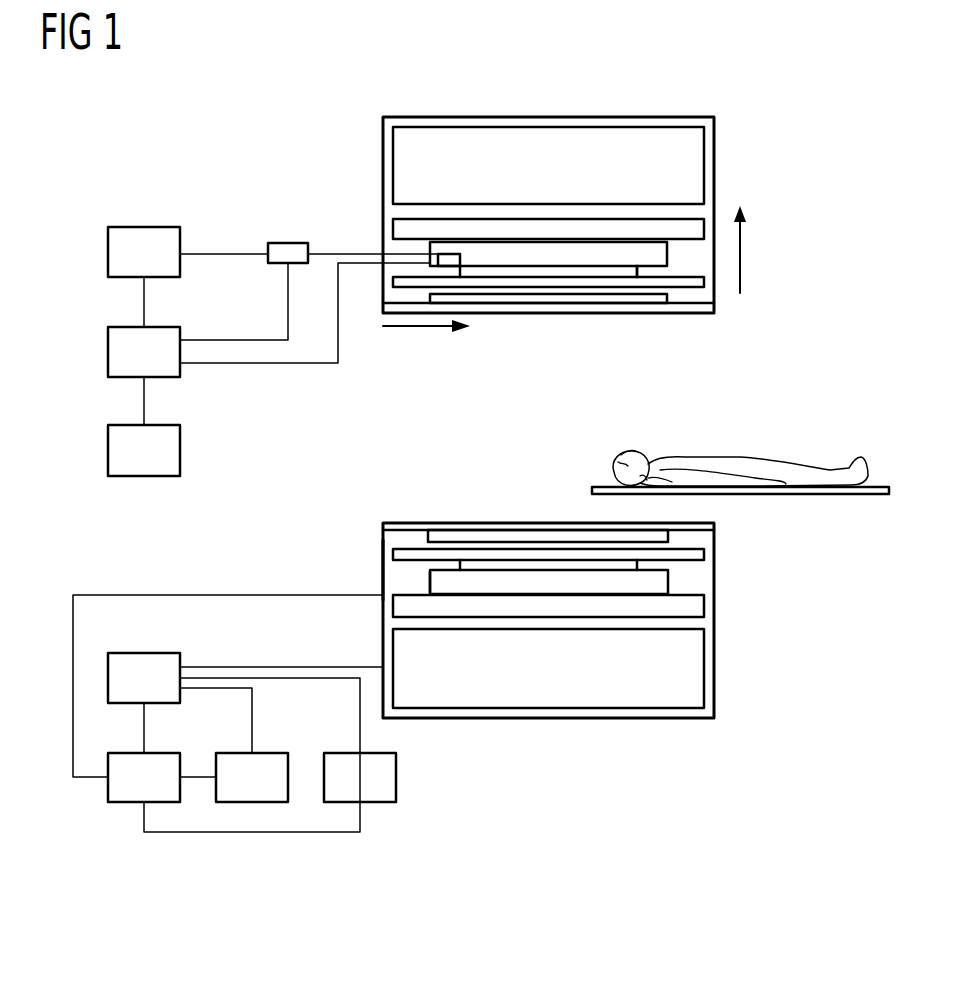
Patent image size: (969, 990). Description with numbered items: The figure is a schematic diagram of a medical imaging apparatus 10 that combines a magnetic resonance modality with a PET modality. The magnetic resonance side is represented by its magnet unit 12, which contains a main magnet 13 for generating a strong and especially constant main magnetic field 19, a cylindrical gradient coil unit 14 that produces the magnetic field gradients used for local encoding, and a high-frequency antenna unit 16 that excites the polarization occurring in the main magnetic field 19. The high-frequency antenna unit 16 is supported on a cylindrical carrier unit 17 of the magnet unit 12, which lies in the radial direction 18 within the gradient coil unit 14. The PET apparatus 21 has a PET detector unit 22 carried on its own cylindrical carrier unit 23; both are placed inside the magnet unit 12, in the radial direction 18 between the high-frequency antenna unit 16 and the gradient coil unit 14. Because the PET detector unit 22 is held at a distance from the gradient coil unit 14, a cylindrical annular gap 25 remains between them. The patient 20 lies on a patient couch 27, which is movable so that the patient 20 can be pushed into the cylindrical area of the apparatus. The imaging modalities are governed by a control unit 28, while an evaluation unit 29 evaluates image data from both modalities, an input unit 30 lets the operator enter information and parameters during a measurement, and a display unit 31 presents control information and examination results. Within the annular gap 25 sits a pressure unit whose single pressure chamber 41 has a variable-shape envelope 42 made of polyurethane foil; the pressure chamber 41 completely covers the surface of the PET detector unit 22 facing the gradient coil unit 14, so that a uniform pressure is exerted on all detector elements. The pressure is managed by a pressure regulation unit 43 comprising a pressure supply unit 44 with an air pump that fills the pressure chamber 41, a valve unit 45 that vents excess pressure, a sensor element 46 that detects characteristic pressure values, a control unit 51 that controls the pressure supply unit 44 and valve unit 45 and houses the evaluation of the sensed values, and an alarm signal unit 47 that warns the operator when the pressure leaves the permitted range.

The medical imaging apparatus 10 is at (810, 171).
The magnet unit 12 is at (670, 760).
The main magnet 13 is at (692, 672).
The gradient coil unit 14 is at (692, 605).
The high-frequency antenna unit 16 is at (505, 536).
The cylindrical carrier unit 17 is at (462, 526).
The radial direction 18 is at (740, 255).
The main magnetic field 19 is at (420, 330).
The patient 20 is at (823, 472).
The PET apparatus 21 is at (378, 563).
The PET detector unit 22 is at (562, 564).
The cylindrical carrier unit 23 is at (407, 555).
The cylindrical annular gap 25 is at (440, 582).
The patient couch 27 is at (848, 497).
The control unit 28 is at (182, 657).
The evaluation unit 29 is at (123, 805).
The input unit 30 is at (255, 805).
The display unit 31 is at (383, 805).
The pressure chamber 41 is at (600, 253).
The envelope 42 is at (650, 266).
The pressure regulation unit 43 is at (93, 184).
The pressure supply unit 44 is at (142, 226).
The valve unit 45 is at (287, 243).
The sensor element 46 is at (447, 254).
The alarm signal unit 47 is at (107, 450).
The control unit 51 is at (107, 352).